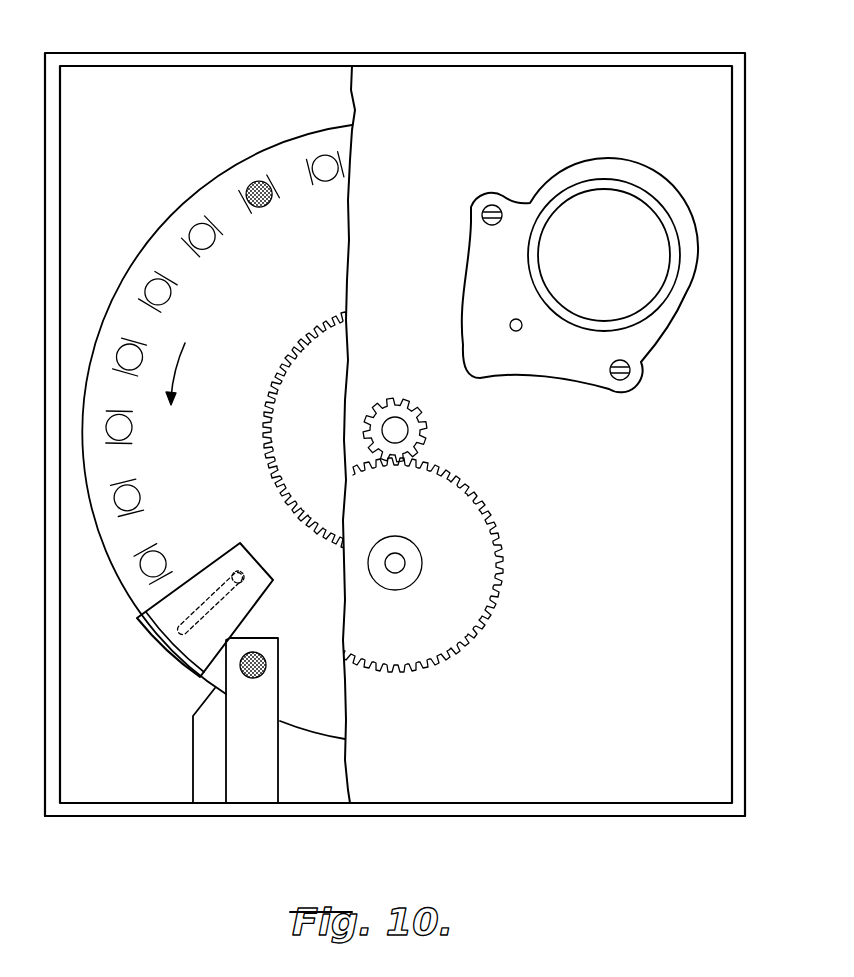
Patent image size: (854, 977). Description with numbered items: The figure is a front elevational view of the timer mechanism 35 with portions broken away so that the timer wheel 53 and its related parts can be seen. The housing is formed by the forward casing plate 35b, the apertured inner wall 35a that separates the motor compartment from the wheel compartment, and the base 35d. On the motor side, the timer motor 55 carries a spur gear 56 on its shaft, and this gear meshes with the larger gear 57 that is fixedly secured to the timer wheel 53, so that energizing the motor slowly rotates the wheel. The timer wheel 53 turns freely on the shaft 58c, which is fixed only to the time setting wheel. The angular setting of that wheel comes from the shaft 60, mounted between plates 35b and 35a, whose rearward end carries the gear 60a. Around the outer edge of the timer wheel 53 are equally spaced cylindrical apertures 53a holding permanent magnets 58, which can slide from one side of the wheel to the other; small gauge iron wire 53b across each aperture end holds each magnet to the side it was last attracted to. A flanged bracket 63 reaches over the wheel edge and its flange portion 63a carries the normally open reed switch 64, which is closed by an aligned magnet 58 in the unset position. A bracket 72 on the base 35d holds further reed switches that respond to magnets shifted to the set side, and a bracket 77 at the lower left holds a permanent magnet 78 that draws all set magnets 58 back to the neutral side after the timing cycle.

The timer mechanism 35 is at (428, 52).
The wall 35a is at (462, 139).
The forward casing plate 35b is at (148, 139).
The base 35d is at (518, 814).
The timer wheel 53 is at (146, 246).
The apertures 53a is at (152, 305).
The iron wire 53b is at (197, 247).
The timer motor 55 is at (604, 258).
The spur gear 56 is at (414, 432).
The gear 57 is at (274, 384).
The permanent magnets 58 is at (268, 186).
The shaft 58c is at (390, 420).
The shaft 60 is at (397, 560).
The gear 60a is at (468, 596).
The flanged bracket 63 is at (165, 645).
The flange portion 63a is at (191, 575).
The reed switch 64 is at (245, 575).
The bracket 72 is at (199, 748).
The bracket 77 is at (257, 768).
The permanent magnet 78 is at (254, 678).